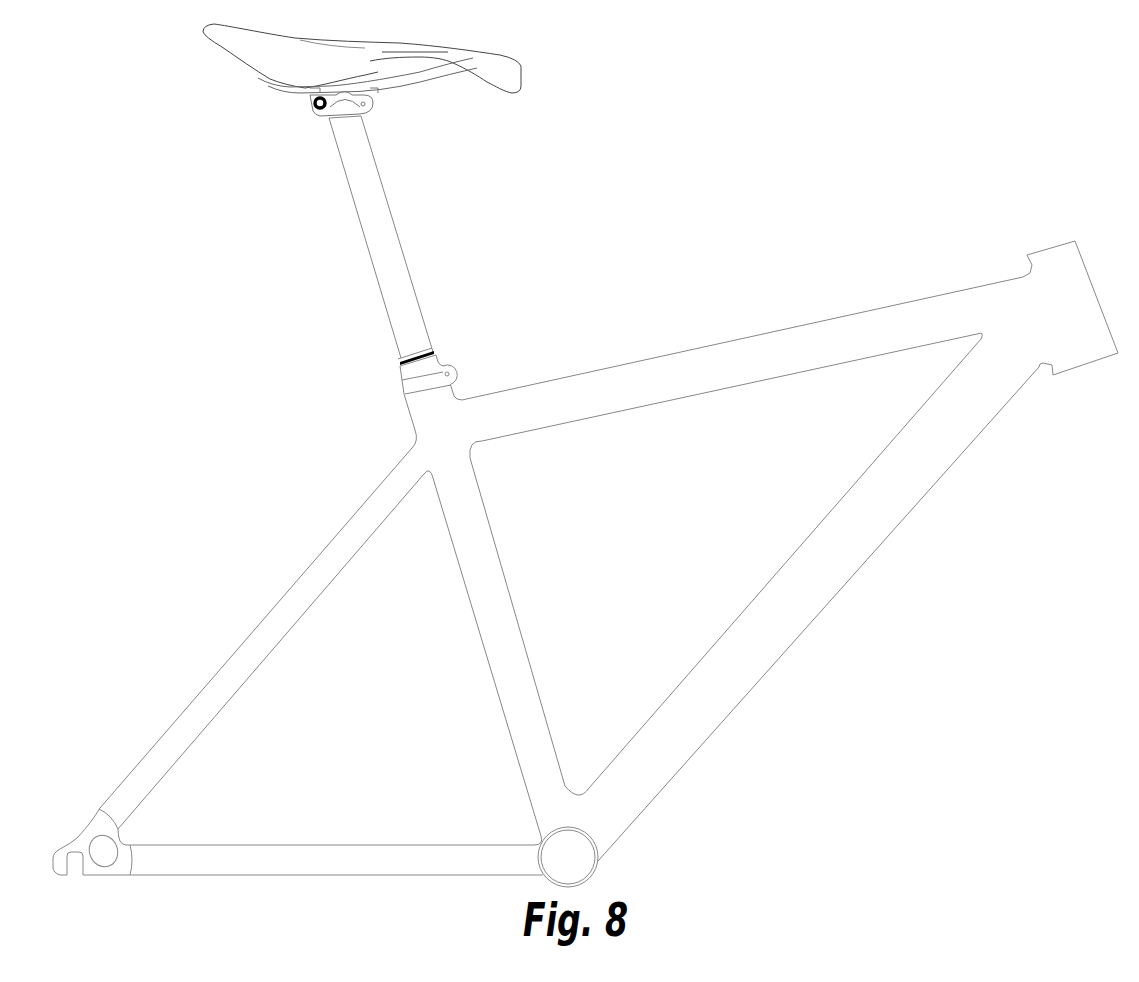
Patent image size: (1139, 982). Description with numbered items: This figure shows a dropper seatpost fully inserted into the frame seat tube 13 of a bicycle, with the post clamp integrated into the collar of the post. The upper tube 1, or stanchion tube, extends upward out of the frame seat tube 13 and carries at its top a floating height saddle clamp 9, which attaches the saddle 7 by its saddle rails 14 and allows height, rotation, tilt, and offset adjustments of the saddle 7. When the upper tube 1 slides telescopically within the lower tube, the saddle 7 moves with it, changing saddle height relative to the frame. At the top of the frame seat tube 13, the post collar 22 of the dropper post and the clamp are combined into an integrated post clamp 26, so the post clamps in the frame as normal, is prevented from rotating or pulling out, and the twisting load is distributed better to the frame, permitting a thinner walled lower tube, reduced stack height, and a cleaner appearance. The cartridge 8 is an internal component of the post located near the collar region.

The upper tube 1 is at (393, 213).
The saddle 7 is at (522, 73).
The cartridge 8 is at (434, 348).
The saddle clamp 9 is at (368, 116).
The frame seat tube 13 is at (507, 583).
The saddle rails 14 is at (434, 81).
The post collar 22 is at (441, 353).
The integrated post clamp 26 is at (456, 370).